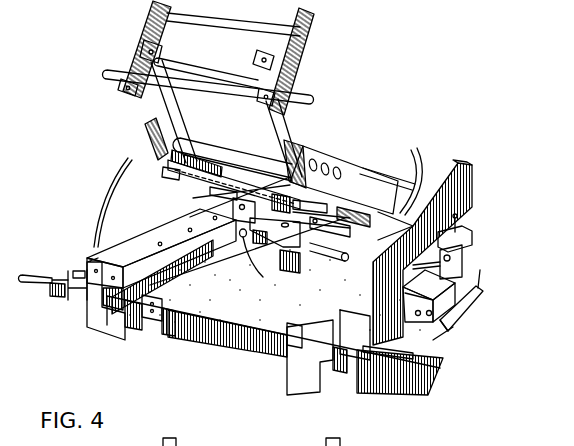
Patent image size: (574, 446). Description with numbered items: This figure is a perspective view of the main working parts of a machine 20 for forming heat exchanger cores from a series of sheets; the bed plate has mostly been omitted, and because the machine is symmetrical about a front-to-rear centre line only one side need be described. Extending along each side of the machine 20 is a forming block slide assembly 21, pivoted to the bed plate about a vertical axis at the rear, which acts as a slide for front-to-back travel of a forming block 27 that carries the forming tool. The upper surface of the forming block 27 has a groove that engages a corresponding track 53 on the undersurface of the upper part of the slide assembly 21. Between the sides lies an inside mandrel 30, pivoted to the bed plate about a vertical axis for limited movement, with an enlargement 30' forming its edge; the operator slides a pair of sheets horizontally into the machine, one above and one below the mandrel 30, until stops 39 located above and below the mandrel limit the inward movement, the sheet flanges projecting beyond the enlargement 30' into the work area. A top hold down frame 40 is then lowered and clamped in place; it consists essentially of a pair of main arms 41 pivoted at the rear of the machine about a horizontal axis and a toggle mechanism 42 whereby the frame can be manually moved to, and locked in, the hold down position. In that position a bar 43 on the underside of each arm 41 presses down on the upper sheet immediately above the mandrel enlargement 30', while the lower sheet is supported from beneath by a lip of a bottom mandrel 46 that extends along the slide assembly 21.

The machine 20 is at (100, 114).
The forming block slide assembly 21 is at (96, 246).
The forming block 27 is at (233, 212).
The inside mandrel 30 is at (305, 352).
The enlargement 30' is at (246, 345).
The stops 39 is at (276, 272).
The top hold down frame 40 is at (307, 147).
The main arms 41 is at (378, 186).
The toggle mechanism 42 is at (142, 40).
The bar 43 is at (178, 174).
The bottom mandrel 46 is at (113, 335).
The track 53 is at (103, 305).